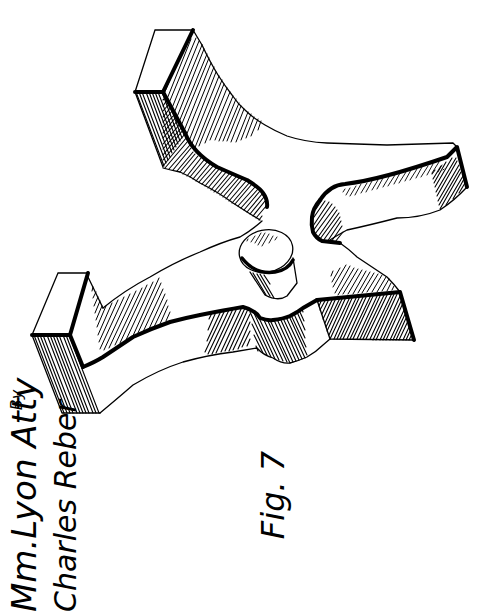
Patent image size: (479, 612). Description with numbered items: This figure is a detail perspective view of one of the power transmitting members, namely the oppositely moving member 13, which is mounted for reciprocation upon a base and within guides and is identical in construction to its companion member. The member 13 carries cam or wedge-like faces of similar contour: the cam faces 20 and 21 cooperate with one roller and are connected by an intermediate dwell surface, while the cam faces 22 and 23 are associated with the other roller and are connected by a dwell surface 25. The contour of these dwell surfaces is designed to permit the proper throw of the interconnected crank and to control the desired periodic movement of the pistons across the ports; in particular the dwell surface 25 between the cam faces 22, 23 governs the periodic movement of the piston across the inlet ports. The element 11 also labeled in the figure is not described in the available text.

The end blocks 11 is at (199, 62).
The arm 13 is at (323, 145).
The end block 20 is at (376, 190).
The end block 21 is at (382, 270).
The arm 22 is at (239, 183).
The arm 23 is at (192, 252).
The hub pin 25 is at (318, 222).